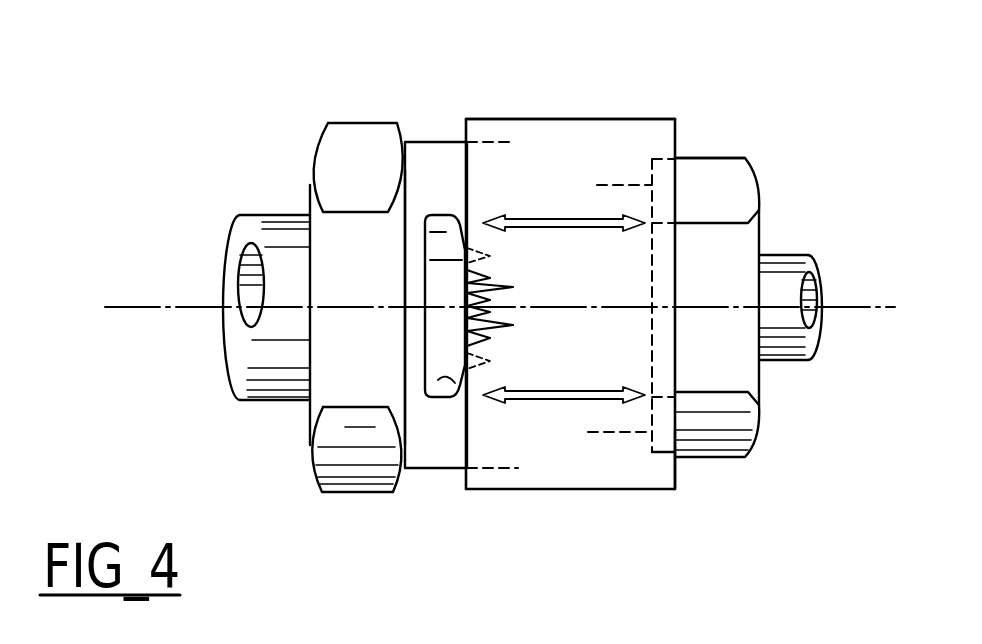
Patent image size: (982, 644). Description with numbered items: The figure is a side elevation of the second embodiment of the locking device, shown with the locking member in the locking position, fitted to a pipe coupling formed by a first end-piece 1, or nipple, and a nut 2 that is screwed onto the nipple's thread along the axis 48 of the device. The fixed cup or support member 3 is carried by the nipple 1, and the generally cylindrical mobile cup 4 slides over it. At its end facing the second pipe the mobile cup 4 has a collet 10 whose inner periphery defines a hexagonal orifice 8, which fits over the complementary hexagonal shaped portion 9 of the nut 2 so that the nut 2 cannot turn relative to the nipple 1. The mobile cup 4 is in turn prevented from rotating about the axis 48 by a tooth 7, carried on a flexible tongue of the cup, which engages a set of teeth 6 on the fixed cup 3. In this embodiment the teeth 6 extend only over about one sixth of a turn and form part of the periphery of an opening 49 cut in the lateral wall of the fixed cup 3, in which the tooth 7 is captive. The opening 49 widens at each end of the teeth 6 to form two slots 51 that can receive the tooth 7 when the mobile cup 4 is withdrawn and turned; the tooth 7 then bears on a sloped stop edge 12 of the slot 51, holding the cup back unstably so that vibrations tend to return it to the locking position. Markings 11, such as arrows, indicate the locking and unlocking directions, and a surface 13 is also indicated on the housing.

The first end-piece 1 is at (354, 118).
The nut 2 is at (733, 193).
The support member 3 is at (436, 128).
The mobile cup 4 is at (568, 149).
The teeth 6 is at (473, 365).
The tooth 7 is at (470, 308).
The hexagonal shaped female portion 8 is at (663, 437).
The hexagonal shaped portion 9 is at (733, 158).
The collet 10 is at (678, 143).
The markings 11 is at (592, 222).
The stop edge 12 is at (437, 375).
The wall outer surface 13 is at (521, 118).
The axis 48 is at (148, 310).
The opening 49 is at (447, 267).
The slots 51 is at (442, 232).